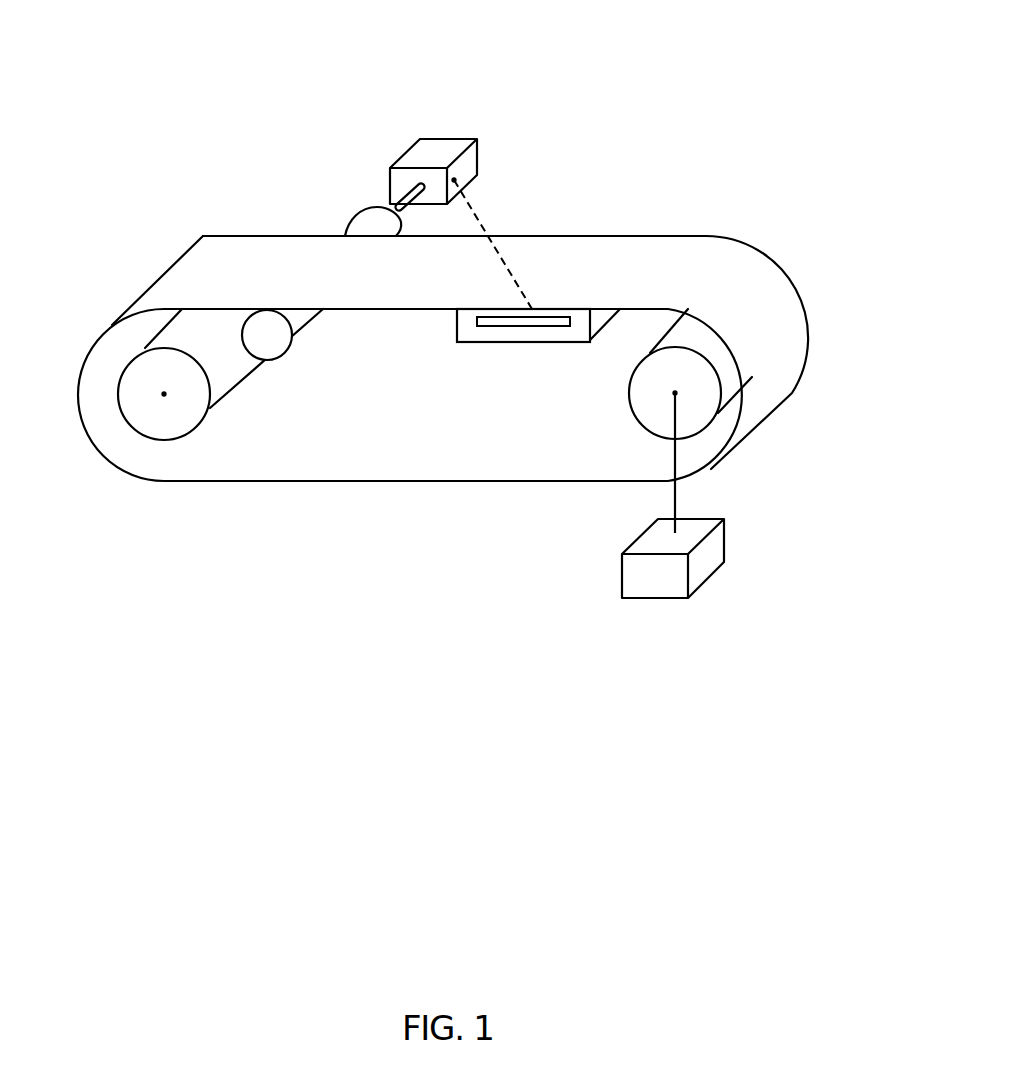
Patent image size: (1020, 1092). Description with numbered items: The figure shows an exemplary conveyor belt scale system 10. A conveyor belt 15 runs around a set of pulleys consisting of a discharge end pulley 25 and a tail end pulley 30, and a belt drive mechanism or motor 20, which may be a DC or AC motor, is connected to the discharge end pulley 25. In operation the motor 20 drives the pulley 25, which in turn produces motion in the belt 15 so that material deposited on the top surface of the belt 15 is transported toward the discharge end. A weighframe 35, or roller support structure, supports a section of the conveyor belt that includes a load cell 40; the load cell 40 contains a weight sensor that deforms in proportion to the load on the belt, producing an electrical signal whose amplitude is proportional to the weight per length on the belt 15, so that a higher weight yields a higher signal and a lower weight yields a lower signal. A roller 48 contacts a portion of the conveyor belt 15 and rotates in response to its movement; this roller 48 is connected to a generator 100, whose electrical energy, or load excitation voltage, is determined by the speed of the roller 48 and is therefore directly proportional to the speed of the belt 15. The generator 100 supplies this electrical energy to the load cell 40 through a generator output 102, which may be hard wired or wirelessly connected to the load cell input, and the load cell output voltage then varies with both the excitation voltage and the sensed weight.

The conveyor belt scale system 10 is at (652, 50).
The conveyor belt 15 is at (730, 243).
The motor 20 is at (707, 562).
The discharge end pulley 25 is at (700, 398).
The tail end pulley 30 is at (152, 413).
The weighframe 35 is at (523, 343).
The load cell 40 is at (545, 313).
The roller 48 is at (273, 352).
The generator 100 is at (438, 145).
The generator output 102 is at (458, 181).